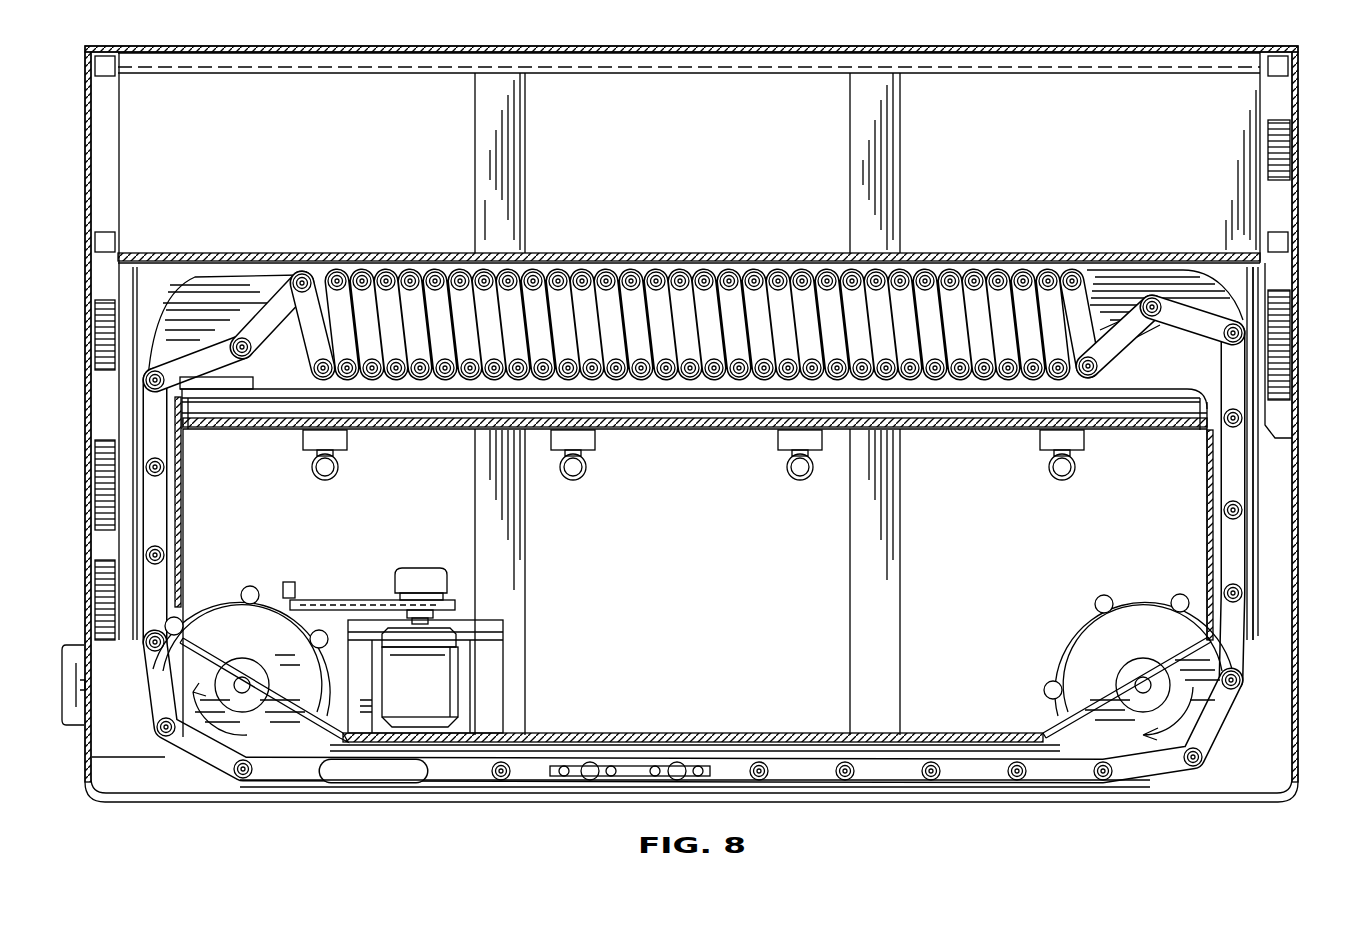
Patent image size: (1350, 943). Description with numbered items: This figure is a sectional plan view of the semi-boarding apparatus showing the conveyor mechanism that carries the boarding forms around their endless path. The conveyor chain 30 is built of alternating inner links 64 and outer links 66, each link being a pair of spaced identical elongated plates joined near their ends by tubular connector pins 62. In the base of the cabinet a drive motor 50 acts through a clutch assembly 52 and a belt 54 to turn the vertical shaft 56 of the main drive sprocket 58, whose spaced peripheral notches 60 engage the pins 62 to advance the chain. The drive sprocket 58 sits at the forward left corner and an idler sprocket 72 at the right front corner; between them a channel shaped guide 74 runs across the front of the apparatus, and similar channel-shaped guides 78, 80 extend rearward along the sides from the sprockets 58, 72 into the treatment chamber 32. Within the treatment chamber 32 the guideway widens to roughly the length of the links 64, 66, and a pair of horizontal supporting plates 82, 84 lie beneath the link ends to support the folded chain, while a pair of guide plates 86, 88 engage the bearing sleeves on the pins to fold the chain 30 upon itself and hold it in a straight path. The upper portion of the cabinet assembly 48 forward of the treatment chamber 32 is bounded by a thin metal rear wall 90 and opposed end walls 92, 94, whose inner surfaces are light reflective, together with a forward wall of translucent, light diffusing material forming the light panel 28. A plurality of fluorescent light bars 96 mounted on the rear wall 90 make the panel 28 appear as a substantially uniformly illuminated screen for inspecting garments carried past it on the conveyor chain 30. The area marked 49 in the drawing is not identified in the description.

The light panel 28 is at (758, 733).
The conveyor chain 30 is at (1251, 659).
The treatment chamber 32 is at (163, 316).
The cabinet assembly 48 is at (1300, 325).
The panel 49 is at (680, 592).
The drive motor 50 is at (396, 694).
The clutch assembly 52 is at (410, 580).
The belt 54 is at (360, 604).
The vertical shaft 56 is at (244, 680).
The main drive sprocket 58 is at (241, 646).
The spaced notches 60 is at (252, 593).
The connector pins 62 is at (331, 780).
The inner links 64 is at (1135, 324).
The outer links 66 is at (1078, 305).
The idler sprocket 72 is at (1125, 605).
The channel shaped guide 74 is at (968, 733).
The channel-shaped guide 78 is at (140, 532).
The channel-shaped guide 80 is at (1252, 530).
The horizontal supporting plate 82 is at (296, 358).
The horizontal supporting plate 84 is at (217, 297).
The guide plate 86 is at (277, 275).
The guide plate 88 is at (277, 387).
The rear wall 90 is at (735, 430).
The end wall 92 is at (190, 557).
The end wall 94 is at (1205, 505).
The fluorescent light bars 96 is at (588, 470).